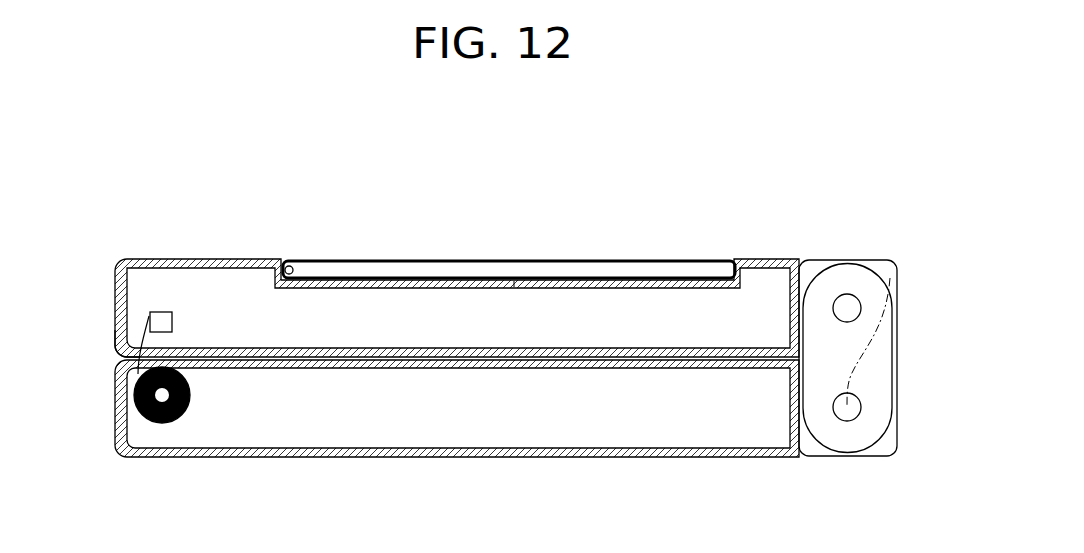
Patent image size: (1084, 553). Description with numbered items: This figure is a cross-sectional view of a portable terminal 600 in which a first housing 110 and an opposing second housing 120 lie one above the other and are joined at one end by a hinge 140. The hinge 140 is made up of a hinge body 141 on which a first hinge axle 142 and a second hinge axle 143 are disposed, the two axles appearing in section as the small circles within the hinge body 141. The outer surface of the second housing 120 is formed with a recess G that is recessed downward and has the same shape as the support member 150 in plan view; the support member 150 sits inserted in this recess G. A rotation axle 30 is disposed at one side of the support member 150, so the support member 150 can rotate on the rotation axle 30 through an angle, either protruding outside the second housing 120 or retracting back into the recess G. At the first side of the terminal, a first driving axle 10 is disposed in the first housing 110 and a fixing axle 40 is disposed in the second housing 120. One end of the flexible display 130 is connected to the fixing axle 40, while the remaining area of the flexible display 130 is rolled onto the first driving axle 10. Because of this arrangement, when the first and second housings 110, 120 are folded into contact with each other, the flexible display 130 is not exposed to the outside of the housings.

The electronic device 600 is at (668, 226).
The second housing 120 is at (207, 262).
The flexible display 130 is at (116, 342).
The first housing 110 is at (452, 451).
The support member 150 is at (560, 269).
The rotation axle 30 is at (290, 266).
The recess G is at (514, 283).
The fixing axle 40 is at (158, 318).
The first driving axle 10 is at (157, 423).
The hinge 140 is at (777, 204).
The hinge body 141 is at (825, 287).
The first hinge axle 142 is at (891, 286).
The second hinge axle 143 is at (847, 306).